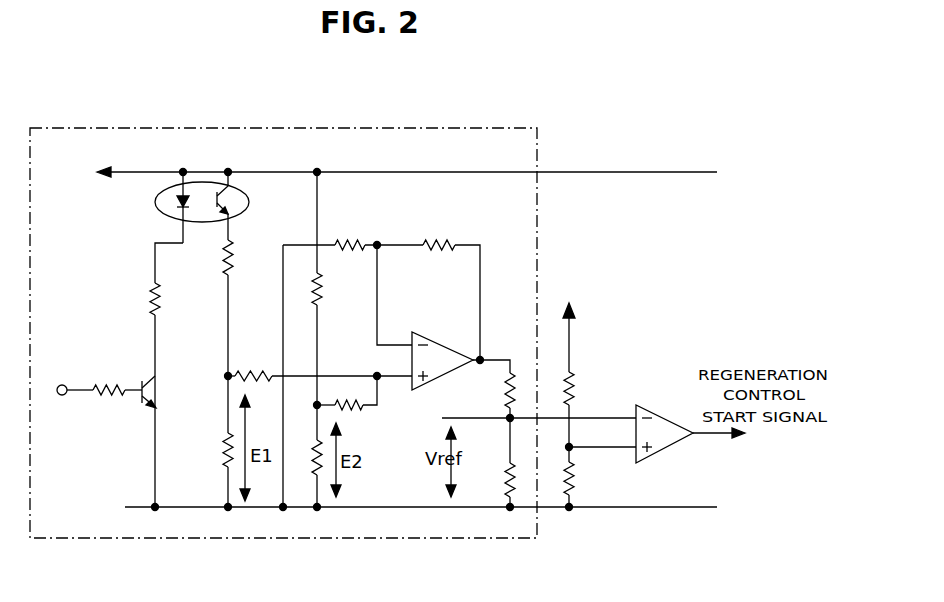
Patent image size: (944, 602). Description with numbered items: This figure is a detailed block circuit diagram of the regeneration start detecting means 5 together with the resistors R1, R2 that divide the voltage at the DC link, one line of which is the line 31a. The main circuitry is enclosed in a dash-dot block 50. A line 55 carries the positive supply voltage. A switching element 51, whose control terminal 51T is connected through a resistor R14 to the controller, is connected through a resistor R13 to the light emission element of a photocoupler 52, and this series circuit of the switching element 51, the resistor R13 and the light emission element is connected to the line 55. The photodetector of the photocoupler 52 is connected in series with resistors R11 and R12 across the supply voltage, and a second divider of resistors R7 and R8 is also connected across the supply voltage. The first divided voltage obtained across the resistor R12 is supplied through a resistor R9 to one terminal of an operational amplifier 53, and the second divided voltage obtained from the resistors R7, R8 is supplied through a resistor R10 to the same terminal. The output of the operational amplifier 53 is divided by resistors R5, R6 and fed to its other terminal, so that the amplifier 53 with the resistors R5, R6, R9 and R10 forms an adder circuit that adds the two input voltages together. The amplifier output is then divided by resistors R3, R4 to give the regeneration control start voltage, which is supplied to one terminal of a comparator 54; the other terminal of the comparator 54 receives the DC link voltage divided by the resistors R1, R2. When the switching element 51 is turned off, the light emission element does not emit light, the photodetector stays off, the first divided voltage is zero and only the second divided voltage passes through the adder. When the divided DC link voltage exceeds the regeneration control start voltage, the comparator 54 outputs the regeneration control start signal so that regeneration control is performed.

The regeneration start detecting means 5 is at (600, 114).
The detection circuit block 50 is at (160, 128).
The switching element 51 is at (158, 382).
The control terminal 51T is at (66, 395).
The photocoupler 52 is at (157, 197).
The operational amplifier 53 is at (446, 342).
The comparator 54 is at (672, 451).
The line 55 is at (425, 172).
The line of the DC link 31a is at (622, 292).
The resistor R1 is at (589, 388).
The resistor R2 is at (589, 478).
The resistor R3 is at (490, 390).
The resistor R4 is at (491, 480).
The resistor R5 is at (350, 229).
The resistor R6 is at (439, 230).
The resistor R7 is at (336, 289).
The resistor R8 is at (304, 445).
The resistor R9 is at (253, 363).
The resistor R10 is at (371, 419).
The resistor R11 is at (249, 253).
The resistor R12 is at (206, 450).
The resistor R13 is at (131, 299).
The resistor R14 is at (107, 375).